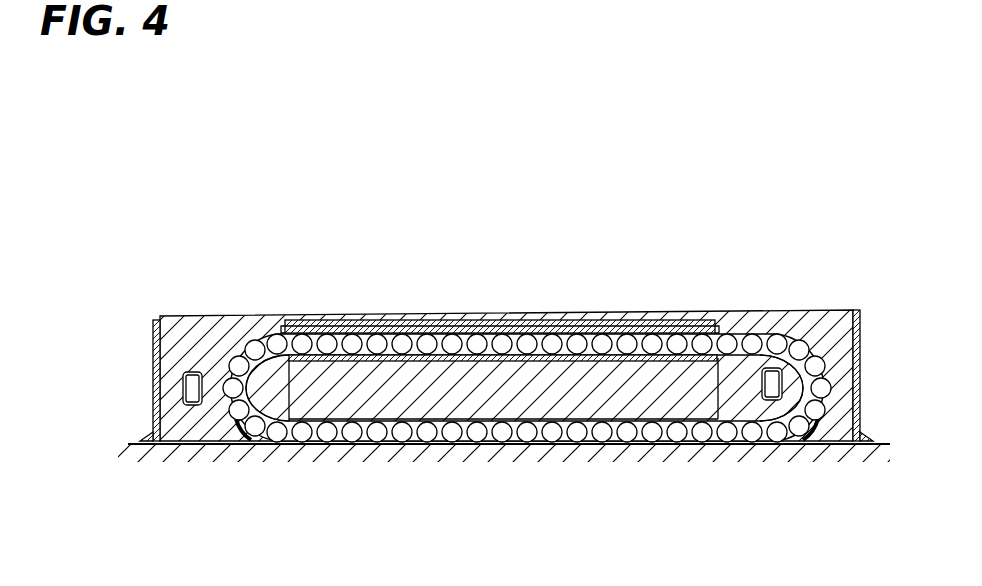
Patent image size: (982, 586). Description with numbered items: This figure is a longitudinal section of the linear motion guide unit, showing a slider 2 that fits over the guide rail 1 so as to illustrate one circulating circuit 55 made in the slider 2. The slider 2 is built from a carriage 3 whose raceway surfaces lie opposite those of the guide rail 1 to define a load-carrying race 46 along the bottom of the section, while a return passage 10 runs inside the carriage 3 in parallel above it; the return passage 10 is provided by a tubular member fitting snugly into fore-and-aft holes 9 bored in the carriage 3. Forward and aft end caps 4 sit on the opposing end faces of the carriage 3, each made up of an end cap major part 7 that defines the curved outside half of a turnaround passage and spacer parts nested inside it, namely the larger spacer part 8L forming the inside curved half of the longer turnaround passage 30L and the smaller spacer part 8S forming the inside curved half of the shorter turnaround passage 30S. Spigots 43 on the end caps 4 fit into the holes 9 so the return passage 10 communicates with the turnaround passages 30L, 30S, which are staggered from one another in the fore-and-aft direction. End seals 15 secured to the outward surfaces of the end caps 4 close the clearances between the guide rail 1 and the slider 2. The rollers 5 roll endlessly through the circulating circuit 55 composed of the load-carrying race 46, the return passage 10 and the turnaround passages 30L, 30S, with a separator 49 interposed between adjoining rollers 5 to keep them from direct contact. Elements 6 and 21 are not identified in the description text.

The guide rail 1 is at (533, 492).
The slider 2 is at (722, 300).
The carriage 3 is at (607, 320).
The end cap 4 is at (223, 328).
The roller 5 is at (582, 340).
The retainer plate 6 is at (483, 320).
The end cap major part 7 is at (202, 348).
The smaller spacer part 8S is at (268, 397).
The larger spacer part 8L is at (735, 400).
The fore-and-aft holes 9 is at (667, 335).
The return passage 10 is at (418, 333).
The end seal 15 is at (152, 356).
The load race plate 21 is at (322, 325).
The longer turnaround passage 30L is at (189, 372).
The shorter turnaround passage 30S is at (240, 428).
The spigot 43 is at (296, 326).
The load-carrying race 46 is at (448, 441).
The separator 49 is at (598, 437).
The circulating circuit 55 is at (259, 443).